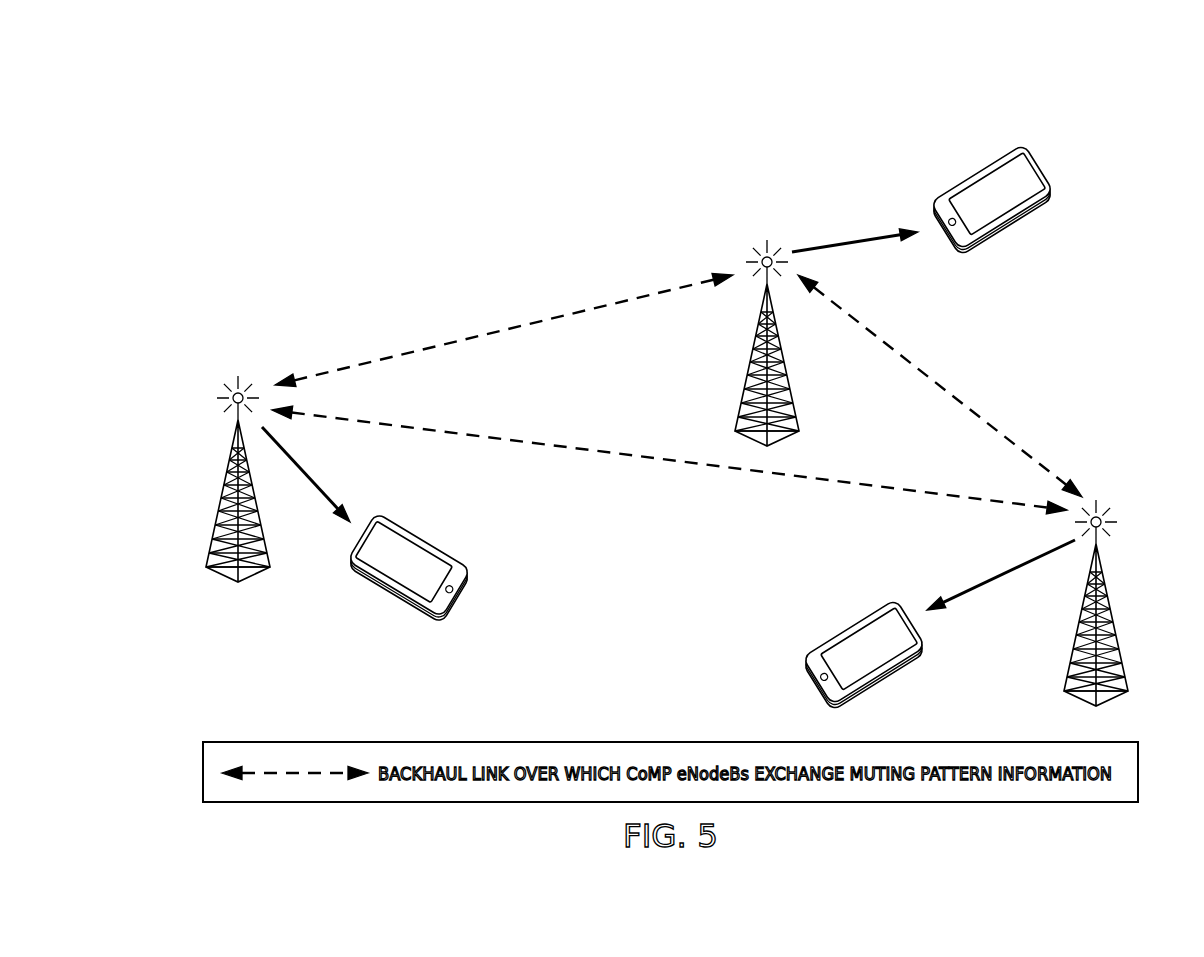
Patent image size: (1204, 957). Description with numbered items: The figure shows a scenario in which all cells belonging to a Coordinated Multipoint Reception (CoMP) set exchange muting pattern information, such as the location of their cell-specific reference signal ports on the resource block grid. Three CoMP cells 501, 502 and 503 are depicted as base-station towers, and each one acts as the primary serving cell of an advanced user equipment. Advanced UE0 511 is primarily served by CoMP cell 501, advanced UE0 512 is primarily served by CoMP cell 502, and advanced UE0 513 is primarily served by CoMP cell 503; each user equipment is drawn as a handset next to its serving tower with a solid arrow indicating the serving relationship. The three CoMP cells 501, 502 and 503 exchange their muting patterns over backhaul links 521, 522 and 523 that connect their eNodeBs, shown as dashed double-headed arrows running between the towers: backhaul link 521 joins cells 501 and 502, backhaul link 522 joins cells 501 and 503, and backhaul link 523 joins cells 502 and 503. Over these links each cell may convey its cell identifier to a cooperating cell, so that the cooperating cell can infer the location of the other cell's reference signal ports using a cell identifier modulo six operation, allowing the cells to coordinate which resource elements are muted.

The CoMP cell 501 is at (221, 496).
The CoMP cell 502 is at (747, 373).
The CoMP cell 503 is at (1114, 619).
The advanced UE0 511 is at (378, 580).
The advanced UE0 512 is at (981, 196).
The advanced UE0 513 is at (843, 650).
The backhaul link 521 is at (405, 350).
The backhaul link 522 is at (572, 447).
The backhaul link 523 is at (905, 350).